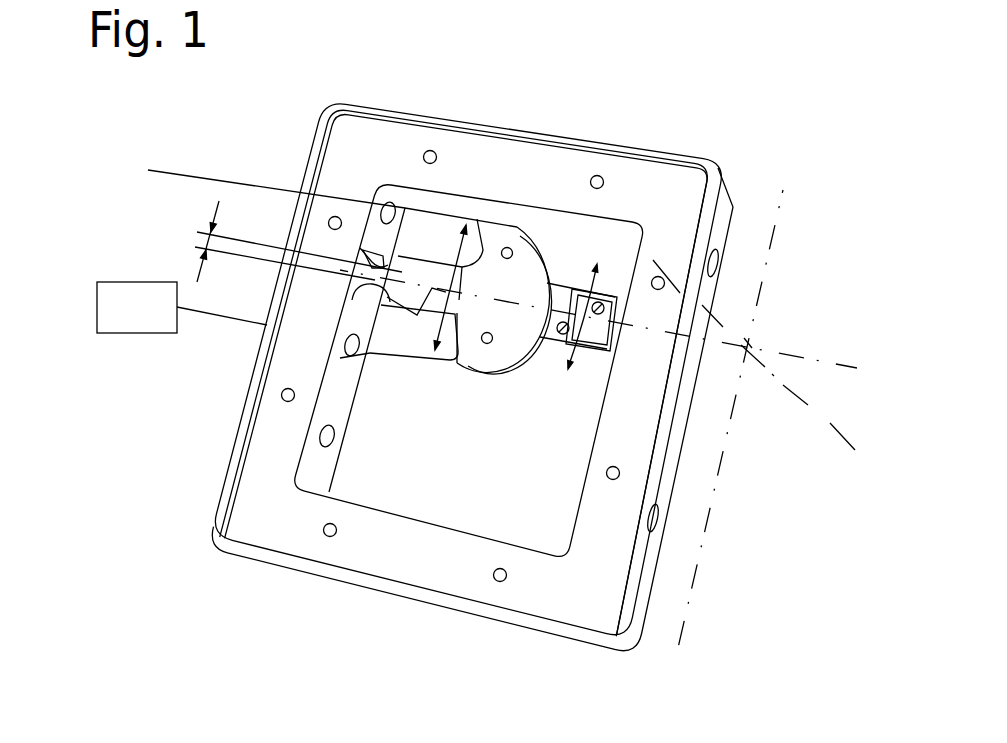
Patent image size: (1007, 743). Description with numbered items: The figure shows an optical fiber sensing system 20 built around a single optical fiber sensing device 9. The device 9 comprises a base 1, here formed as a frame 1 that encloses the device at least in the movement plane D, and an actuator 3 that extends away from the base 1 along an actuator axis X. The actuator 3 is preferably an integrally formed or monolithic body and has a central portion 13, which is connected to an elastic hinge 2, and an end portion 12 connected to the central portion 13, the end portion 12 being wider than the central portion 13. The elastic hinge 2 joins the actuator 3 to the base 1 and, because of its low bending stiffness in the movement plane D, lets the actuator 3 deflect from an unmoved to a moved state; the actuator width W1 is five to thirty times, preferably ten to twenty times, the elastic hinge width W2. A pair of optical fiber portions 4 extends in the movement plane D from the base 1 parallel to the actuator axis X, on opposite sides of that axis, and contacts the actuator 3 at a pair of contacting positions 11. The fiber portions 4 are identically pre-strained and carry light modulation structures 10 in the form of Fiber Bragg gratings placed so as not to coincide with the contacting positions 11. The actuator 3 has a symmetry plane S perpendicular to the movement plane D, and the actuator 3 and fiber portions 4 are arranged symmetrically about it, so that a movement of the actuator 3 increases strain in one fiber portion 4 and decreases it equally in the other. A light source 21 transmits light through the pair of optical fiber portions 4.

The base 1 is at (283, 428).
The elastic hinge 2 is at (383, 268).
The actuator 3 is at (508, 347).
The pair of optical fiber portions 4 is at (370, 353).
The optical fiber sensing device 9 is at (417, 198).
The light modulation structures 10 is at (443, 215).
The contacting positions 11 is at (517, 207).
The end portion 12 is at (540, 282).
The central portion 13 is at (432, 320).
The optical fiber sensing system 20 is at (690, 126).
The light source 21 is at (105, 310).
The actuator width W1 is at (448, 287).
The elastic hinge width W2 is at (198, 240).
The movement plane D is at (770, 240).
The actuator axis X is at (812, 337).
The symmetry plane S is at (807, 403).